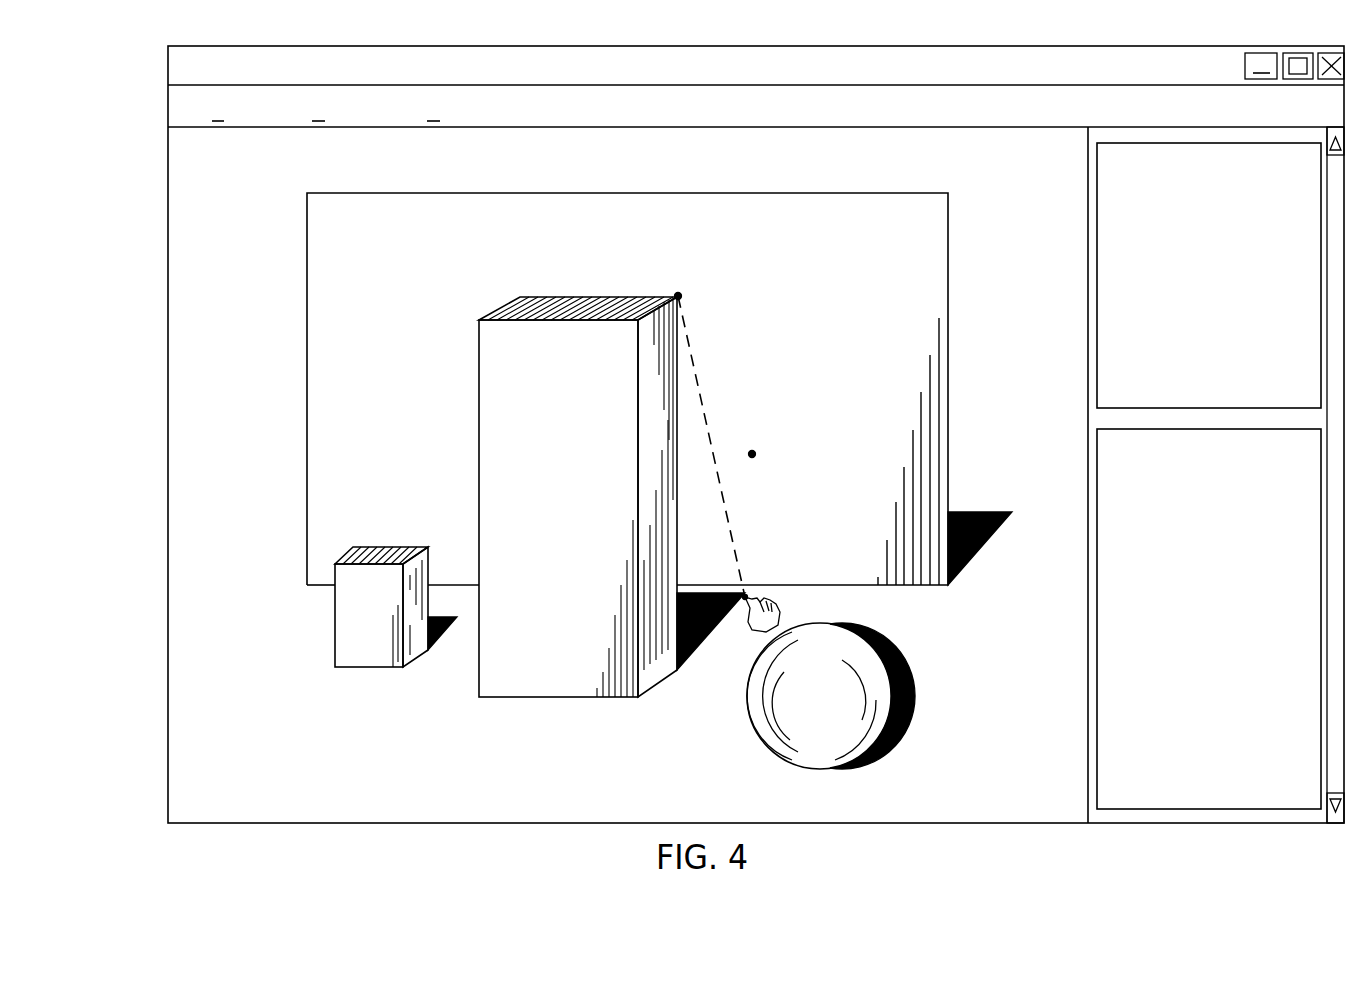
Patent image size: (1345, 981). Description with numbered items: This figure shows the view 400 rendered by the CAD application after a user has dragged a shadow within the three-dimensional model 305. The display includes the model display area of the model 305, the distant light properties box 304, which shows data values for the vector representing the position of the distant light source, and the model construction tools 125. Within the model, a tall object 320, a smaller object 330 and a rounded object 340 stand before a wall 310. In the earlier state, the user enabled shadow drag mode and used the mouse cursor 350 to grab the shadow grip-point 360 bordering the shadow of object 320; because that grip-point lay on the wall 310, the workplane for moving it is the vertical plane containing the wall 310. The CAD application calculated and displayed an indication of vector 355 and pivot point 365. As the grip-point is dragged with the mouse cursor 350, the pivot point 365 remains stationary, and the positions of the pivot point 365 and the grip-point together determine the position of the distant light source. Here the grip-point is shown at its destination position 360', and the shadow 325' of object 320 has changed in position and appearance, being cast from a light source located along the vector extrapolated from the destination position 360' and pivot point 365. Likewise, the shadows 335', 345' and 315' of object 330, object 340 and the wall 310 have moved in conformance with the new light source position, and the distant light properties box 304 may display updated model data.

The view 400 is at (102, 265).
The 3D model 305 is at (188, 730).
The distant light properties box 304 is at (1110, 209).
The 3D model construction tools 125 is at (1115, 737).
The wall 310 is at (330, 241).
The object 320 is at (530, 685).
The shadow 325' is at (711, 645).
The object 330 is at (350, 621).
The shadow 335' is at (452, 652).
The shadow 315' is at (980, 515).
The object 340 is at (770, 742).
The shadow 345' is at (913, 696).
The mouse cursor 350 is at (770, 612).
The vector 355 is at (688, 337).
The shadow grip-point 360 is at (767, 415).
The destination position 360' is at (784, 568).
The pivot point 365 is at (678, 292).